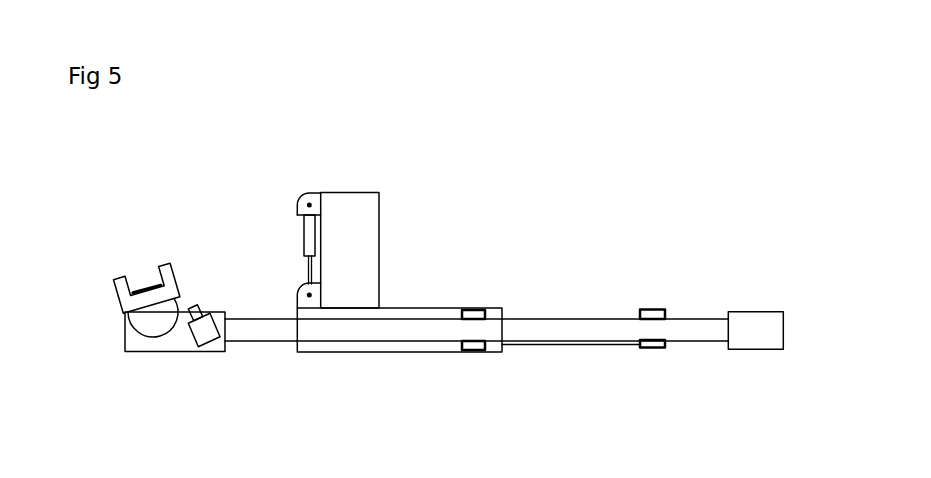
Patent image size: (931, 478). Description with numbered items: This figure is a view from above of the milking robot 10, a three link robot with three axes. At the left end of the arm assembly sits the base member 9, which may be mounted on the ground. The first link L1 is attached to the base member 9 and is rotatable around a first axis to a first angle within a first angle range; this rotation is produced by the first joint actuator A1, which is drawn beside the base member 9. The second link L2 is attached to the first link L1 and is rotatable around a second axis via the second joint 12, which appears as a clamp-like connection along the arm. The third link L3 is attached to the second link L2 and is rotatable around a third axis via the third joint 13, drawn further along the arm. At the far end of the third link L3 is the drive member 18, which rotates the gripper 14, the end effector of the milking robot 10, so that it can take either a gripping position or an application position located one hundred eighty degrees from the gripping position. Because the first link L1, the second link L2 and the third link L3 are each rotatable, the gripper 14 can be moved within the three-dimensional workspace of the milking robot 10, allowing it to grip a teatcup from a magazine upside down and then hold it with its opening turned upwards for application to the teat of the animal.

The gripper 14 is at (139, 260).
The first joint actuator A1 is at (308, 237).
The base member 9 is at (367, 219).
The milking robot 10 is at (566, 206).
The first link L1 is at (393, 348).
The second link L2 is at (573, 318).
The third link L3 is at (543, 330).
The second joint 12 is at (462, 352).
The third joint 13 is at (645, 350).
The drive member 18 is at (748, 343).